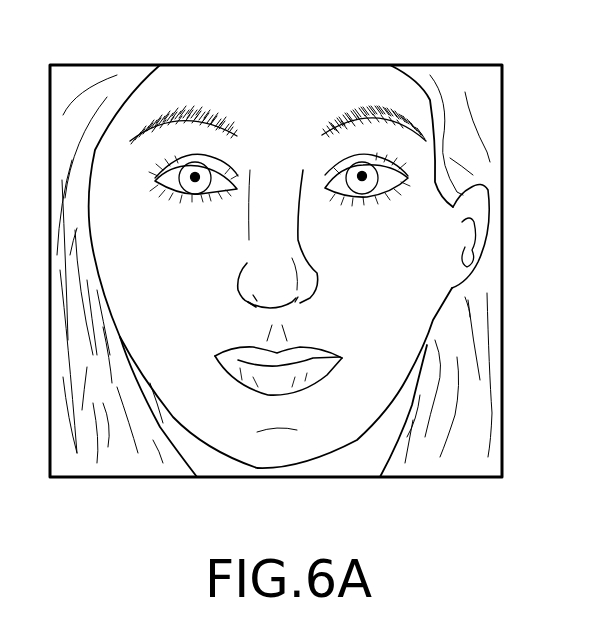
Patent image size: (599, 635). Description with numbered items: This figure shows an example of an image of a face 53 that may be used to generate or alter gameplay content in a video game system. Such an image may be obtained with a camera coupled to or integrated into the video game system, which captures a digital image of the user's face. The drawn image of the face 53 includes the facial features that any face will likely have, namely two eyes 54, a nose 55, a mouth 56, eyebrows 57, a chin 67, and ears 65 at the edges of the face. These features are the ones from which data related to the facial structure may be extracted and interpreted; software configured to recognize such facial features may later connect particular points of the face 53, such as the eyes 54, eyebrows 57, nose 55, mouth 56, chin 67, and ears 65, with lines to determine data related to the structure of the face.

The face 53 is at (190, 75).
The eyebrows 57 is at (336, 130).
The eyes 54 is at (190, 188).
The nose 55 is at (263, 255).
The mouth 56 is at (323, 351).
The ears 65 is at (453, 265).
The chin 67 is at (265, 452).